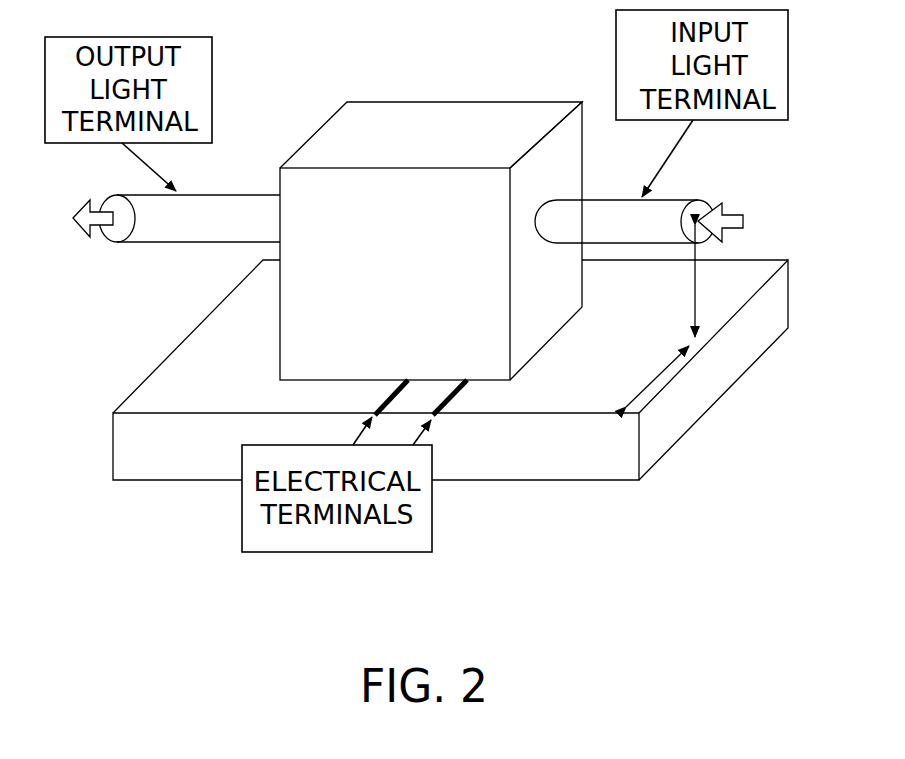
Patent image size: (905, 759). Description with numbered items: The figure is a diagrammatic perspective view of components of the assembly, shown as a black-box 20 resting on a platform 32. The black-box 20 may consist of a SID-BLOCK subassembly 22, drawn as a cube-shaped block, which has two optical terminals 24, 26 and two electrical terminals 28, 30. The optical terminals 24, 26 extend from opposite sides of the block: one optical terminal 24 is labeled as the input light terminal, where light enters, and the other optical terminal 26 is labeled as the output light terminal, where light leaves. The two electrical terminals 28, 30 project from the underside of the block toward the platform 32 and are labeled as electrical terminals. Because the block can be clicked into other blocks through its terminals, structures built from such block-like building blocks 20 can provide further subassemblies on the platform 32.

The black-box 20 is at (431, 211).
The SID-BLOCK subassembly 22 is at (378, 120).
The optical terminal 24 is at (677, 197).
The optical terminal 26 is at (178, 243).
The electrical terminal 28 is at (355, 447).
The electrical terminal 30 is at (380, 399).
The platform 32 is at (775, 305).